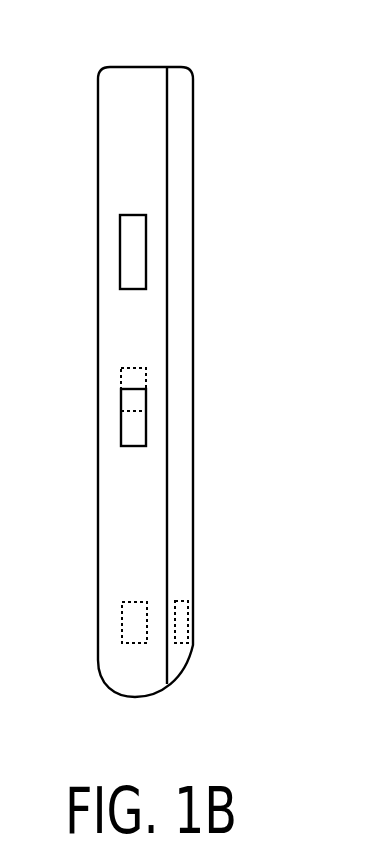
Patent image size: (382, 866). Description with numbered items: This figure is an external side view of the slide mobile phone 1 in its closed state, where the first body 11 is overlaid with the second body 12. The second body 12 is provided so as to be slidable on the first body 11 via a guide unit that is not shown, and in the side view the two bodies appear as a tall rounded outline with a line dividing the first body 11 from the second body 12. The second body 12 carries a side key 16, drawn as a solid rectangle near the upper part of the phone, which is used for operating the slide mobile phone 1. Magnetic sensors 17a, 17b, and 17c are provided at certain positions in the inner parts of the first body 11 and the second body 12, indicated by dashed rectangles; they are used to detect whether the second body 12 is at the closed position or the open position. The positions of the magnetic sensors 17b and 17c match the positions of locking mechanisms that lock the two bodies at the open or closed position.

The slide mobile phone 1 is at (212, 483).
The first body 11 is at (129, 73).
The second body 12 is at (194, 135).
The side key 16 is at (146, 250).
The magnetic sensor 17a is at (188, 622).
The magnetic sensor 17b is at (135, 602).
The magnetic sensor 17c is at (146, 375).